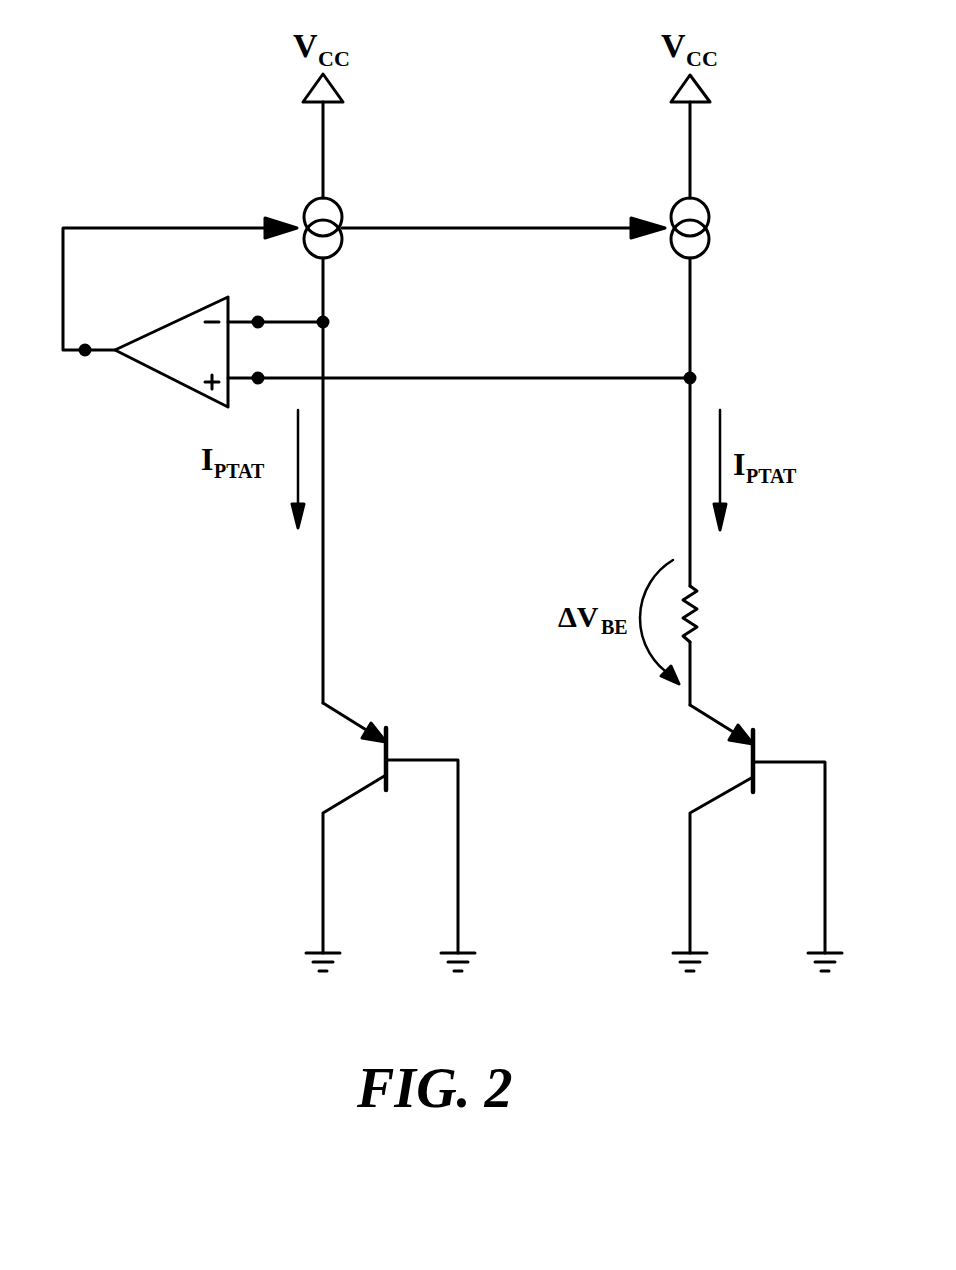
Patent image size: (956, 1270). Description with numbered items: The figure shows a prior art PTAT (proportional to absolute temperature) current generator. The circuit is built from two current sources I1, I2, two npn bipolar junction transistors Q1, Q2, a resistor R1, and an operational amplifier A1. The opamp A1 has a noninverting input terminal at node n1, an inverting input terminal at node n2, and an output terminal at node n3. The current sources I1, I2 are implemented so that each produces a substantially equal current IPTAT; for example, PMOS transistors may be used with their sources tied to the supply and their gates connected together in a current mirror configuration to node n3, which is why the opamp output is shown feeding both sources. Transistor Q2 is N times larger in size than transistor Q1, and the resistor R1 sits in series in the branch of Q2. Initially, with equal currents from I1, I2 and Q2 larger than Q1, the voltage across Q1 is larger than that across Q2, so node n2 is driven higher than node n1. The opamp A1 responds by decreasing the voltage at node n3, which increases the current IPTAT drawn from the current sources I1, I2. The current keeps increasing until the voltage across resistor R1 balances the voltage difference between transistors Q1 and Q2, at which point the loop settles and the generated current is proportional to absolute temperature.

The current source I1 is at (334, 212).
The current source I2 is at (703, 215).
The operational amplifier A1 is at (171, 344).
The noninverting input terminal node n1 is at (261, 360).
The inverting input terminal node n2 is at (261, 304).
The output terminal node n3 is at (82, 371).
The resistor R1 is at (712, 614).
The npn bipolar junction transistor Q1 is at (357, 828).
The npn bipolar junction transistor Q2 is at (725, 829).